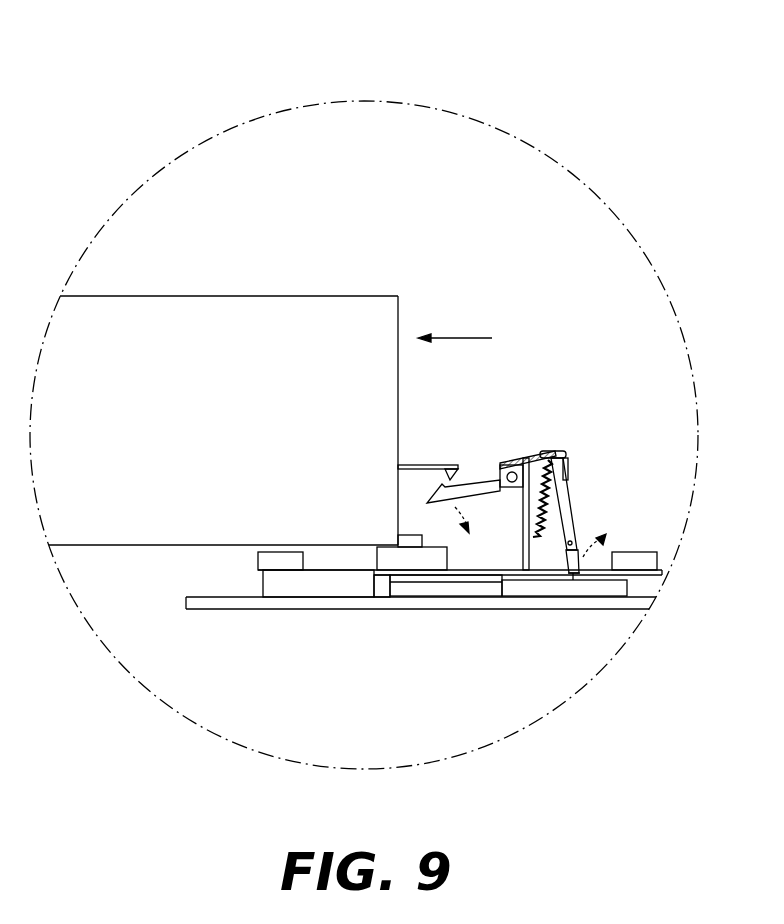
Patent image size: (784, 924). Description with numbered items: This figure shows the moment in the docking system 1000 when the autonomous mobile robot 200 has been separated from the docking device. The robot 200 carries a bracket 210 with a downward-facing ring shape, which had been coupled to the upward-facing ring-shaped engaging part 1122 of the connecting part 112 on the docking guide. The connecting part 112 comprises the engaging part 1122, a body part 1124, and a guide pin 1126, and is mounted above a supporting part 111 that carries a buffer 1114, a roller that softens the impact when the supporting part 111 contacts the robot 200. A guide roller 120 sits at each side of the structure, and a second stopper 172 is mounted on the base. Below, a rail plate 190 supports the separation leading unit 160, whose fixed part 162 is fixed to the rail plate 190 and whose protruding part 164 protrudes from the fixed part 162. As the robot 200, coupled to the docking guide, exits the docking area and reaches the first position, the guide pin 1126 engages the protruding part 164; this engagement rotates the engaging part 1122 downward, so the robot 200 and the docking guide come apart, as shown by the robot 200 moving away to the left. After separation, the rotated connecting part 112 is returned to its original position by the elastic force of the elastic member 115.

The docking system 1000 is at (155, 77).
The autonomous mobile robot 200 is at (372, 296).
The bracket 210 is at (417, 464).
The buffer 1114 is at (415, 541).
The guide roller 120 is at (262, 557).
The supporting part 111 is at (487, 571).
The second stopper 172 is at (382, 593).
The separation leading unit 160 is at (508, 640).
The fixed part 162 is at (509, 586).
The protruding part 164 is at (573, 576).
The rail plate 190 is at (315, 606).
The engaging part 1122 is at (482, 484).
The body part 1124 is at (520, 457).
The connecting part 112 is at (584, 501).
The elastic member 115 is at (552, 490).
The guide pin 1126 is at (579, 575).